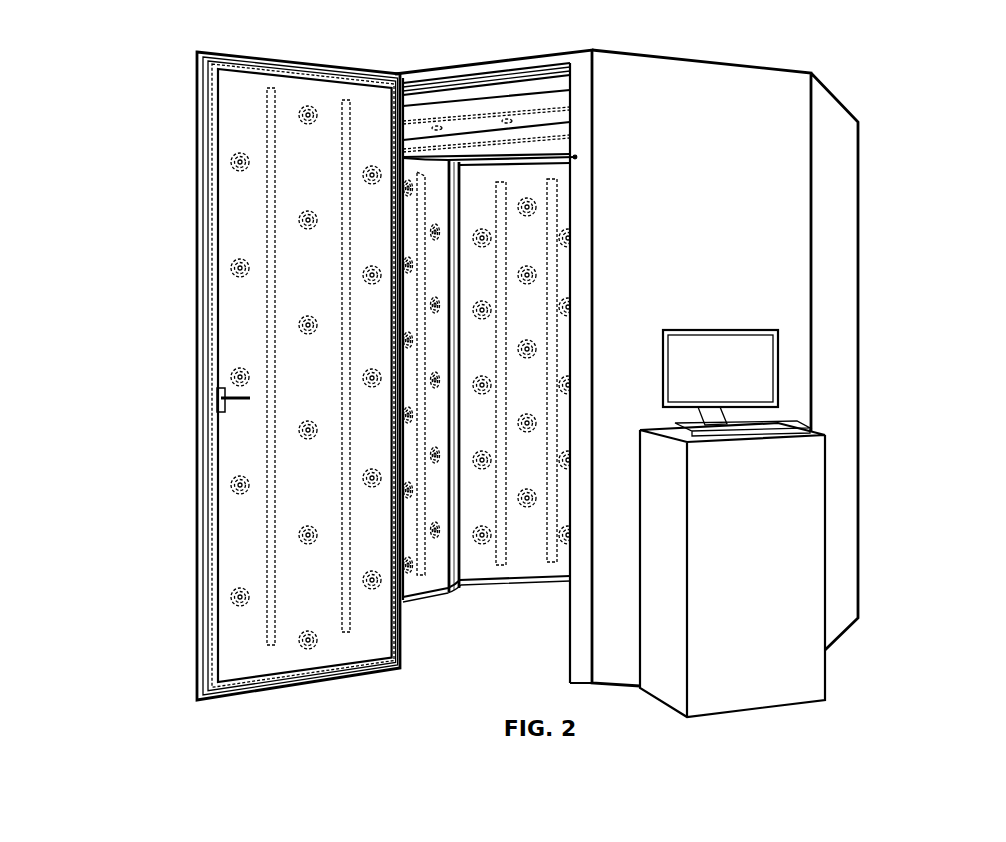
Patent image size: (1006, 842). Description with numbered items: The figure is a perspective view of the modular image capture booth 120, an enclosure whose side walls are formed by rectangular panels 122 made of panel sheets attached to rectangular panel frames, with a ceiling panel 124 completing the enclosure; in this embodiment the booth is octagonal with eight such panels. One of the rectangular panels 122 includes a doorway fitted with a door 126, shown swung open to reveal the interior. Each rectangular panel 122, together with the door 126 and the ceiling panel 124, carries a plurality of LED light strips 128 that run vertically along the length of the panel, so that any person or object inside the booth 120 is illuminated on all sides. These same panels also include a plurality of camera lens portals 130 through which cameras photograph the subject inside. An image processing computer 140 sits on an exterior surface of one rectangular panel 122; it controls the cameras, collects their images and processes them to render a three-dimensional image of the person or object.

The modular image capture booth 120 is at (551, 369).
The rectangular panel 122 is at (842, 273).
The ceiling panel 124 is at (513, 62).
The door 126 is at (190, 91).
The LED light strip 128 is at (272, 640).
The camera lens portal 130 is at (299, 219).
The image processing computer 140 is at (780, 390).